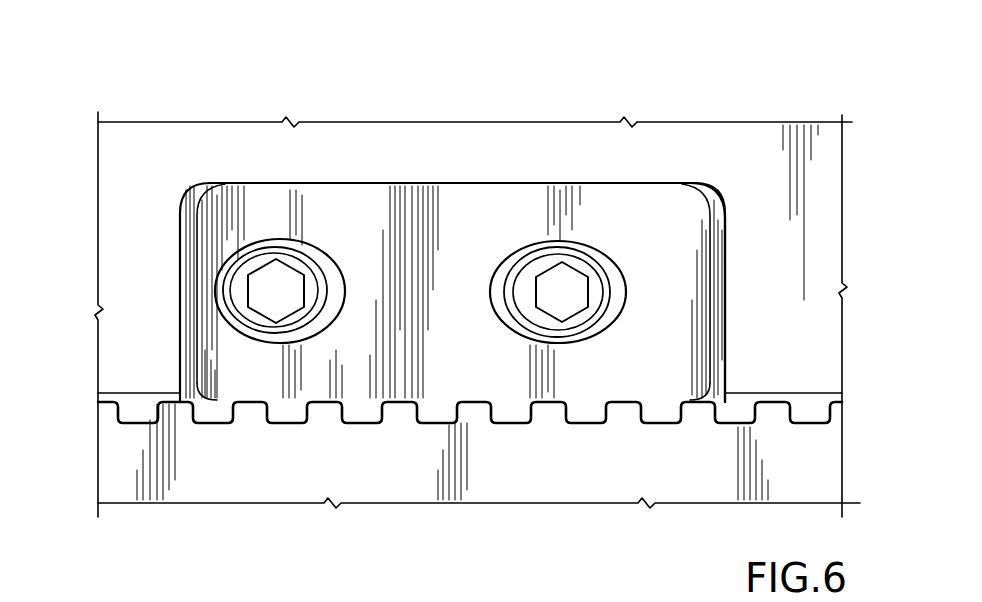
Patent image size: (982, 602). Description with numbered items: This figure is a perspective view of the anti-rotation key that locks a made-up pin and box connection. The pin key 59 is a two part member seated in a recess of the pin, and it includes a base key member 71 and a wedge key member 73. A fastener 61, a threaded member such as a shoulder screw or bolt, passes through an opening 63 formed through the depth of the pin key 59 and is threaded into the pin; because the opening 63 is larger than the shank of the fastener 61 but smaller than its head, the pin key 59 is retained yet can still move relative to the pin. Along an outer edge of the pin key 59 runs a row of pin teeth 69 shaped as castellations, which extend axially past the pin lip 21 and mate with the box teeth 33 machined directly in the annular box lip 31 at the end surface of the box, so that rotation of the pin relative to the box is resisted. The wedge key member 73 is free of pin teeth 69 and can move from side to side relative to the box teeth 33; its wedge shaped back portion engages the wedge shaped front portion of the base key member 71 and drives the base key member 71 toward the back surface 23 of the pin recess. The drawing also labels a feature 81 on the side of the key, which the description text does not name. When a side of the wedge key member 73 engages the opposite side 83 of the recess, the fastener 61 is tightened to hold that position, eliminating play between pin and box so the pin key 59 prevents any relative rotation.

The pin lip 21 is at (810, 412).
The back surface 23 is at (718, 215).
The box lip 31 is at (135, 400).
The box teeth 33 is at (707, 410).
The pin key 59 is at (500, 210).
The fastener 61 is at (585, 260).
The opening 63 is at (307, 245).
The pin teeth 69 is at (588, 412).
The base key member 71 is at (685, 253).
The wedge key member 73 is at (330, 377).
The block edge 81 is at (720, 283).
The opposite side 83 is at (187, 292).